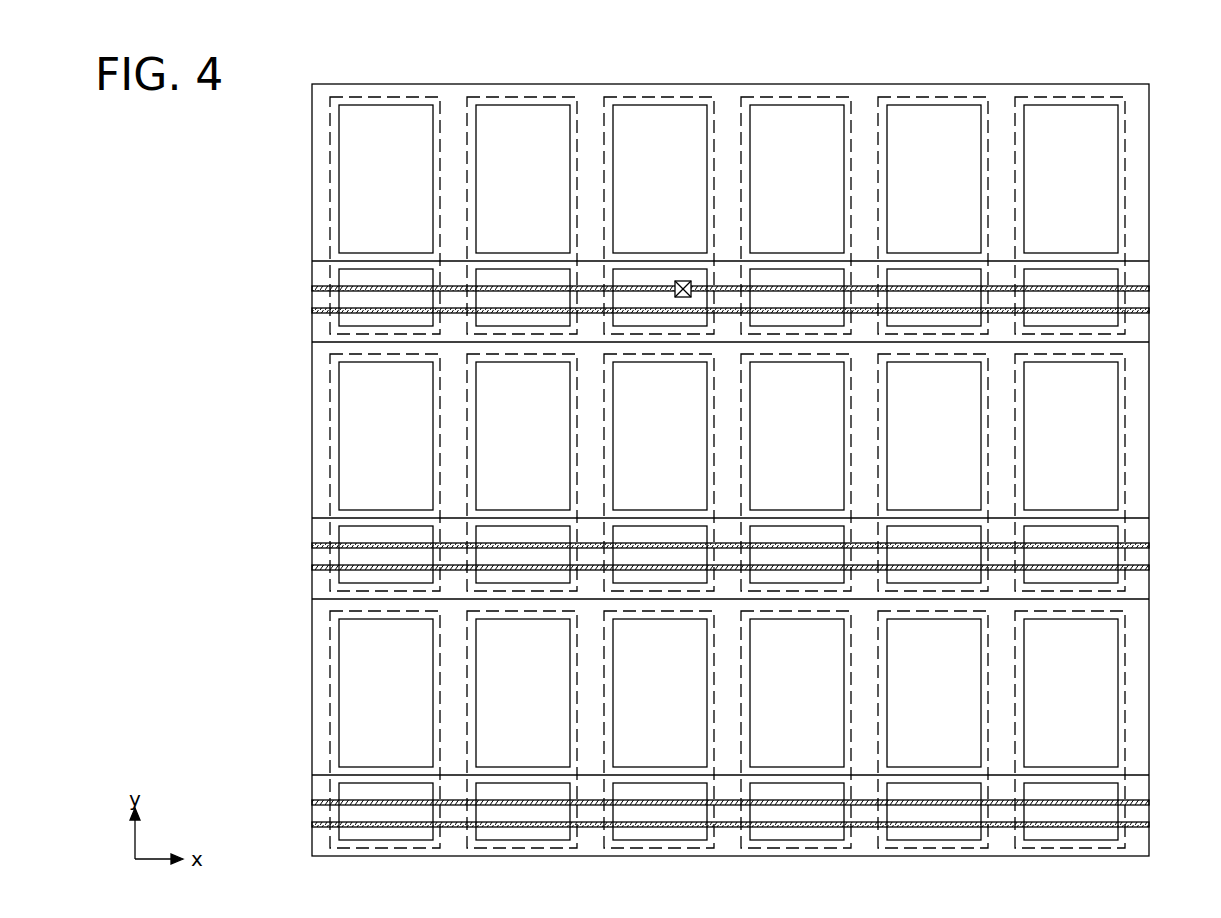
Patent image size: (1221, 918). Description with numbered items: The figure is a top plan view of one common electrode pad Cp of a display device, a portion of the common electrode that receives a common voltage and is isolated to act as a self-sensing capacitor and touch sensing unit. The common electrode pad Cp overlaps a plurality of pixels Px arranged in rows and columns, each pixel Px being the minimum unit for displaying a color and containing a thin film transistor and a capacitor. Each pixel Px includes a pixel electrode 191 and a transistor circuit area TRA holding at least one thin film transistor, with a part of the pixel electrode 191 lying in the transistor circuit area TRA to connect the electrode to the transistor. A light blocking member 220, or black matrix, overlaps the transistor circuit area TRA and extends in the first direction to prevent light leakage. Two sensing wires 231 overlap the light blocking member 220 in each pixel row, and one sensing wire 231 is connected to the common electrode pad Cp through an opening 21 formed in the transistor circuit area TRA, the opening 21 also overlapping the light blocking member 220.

The common electrode pad Cp is at (1149, 112).
The pixel Px is at (330, 158).
The pixel electrode 191 is at (339, 216).
The transistor circuit area TRA is at (339, 272).
The light blocking member 220 is at (762, 534).
The sensing wire 231 is at (1166, 342).
The opening 21 is at (683, 281).